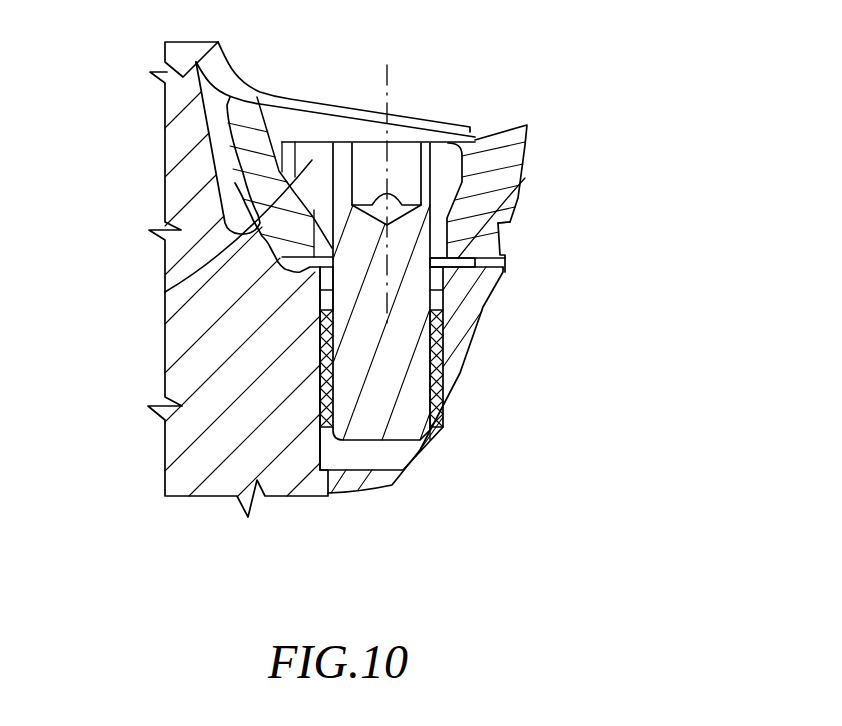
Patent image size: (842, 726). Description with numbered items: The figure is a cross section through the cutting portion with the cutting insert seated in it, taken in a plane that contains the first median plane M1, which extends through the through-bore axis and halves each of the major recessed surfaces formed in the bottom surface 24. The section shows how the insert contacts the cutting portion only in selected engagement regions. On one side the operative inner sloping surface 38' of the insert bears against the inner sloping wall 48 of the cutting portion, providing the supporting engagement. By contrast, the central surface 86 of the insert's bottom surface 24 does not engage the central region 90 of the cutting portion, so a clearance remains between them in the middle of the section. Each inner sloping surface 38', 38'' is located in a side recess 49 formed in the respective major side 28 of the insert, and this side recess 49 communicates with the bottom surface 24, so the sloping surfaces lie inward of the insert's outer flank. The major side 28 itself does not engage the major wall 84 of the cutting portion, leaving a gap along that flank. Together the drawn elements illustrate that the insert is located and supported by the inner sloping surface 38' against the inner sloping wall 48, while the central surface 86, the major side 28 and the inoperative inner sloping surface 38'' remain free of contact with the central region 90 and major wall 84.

The bottom surface 24 is at (497, 258).
The major side 28 is at (222, 200).
The operative inner sloping surface 38' is at (203, 279).
The inner sloping surface 38'' is at (494, 372).
The inner sloping wall 48 is at (301, 170).
The side recess 49 is at (507, 234).
The major wall 84 is at (214, 150).
The central surface 86 is at (482, 300).
The central region 90 is at (520, 180).
The first median plane M1 is at (388, 177).